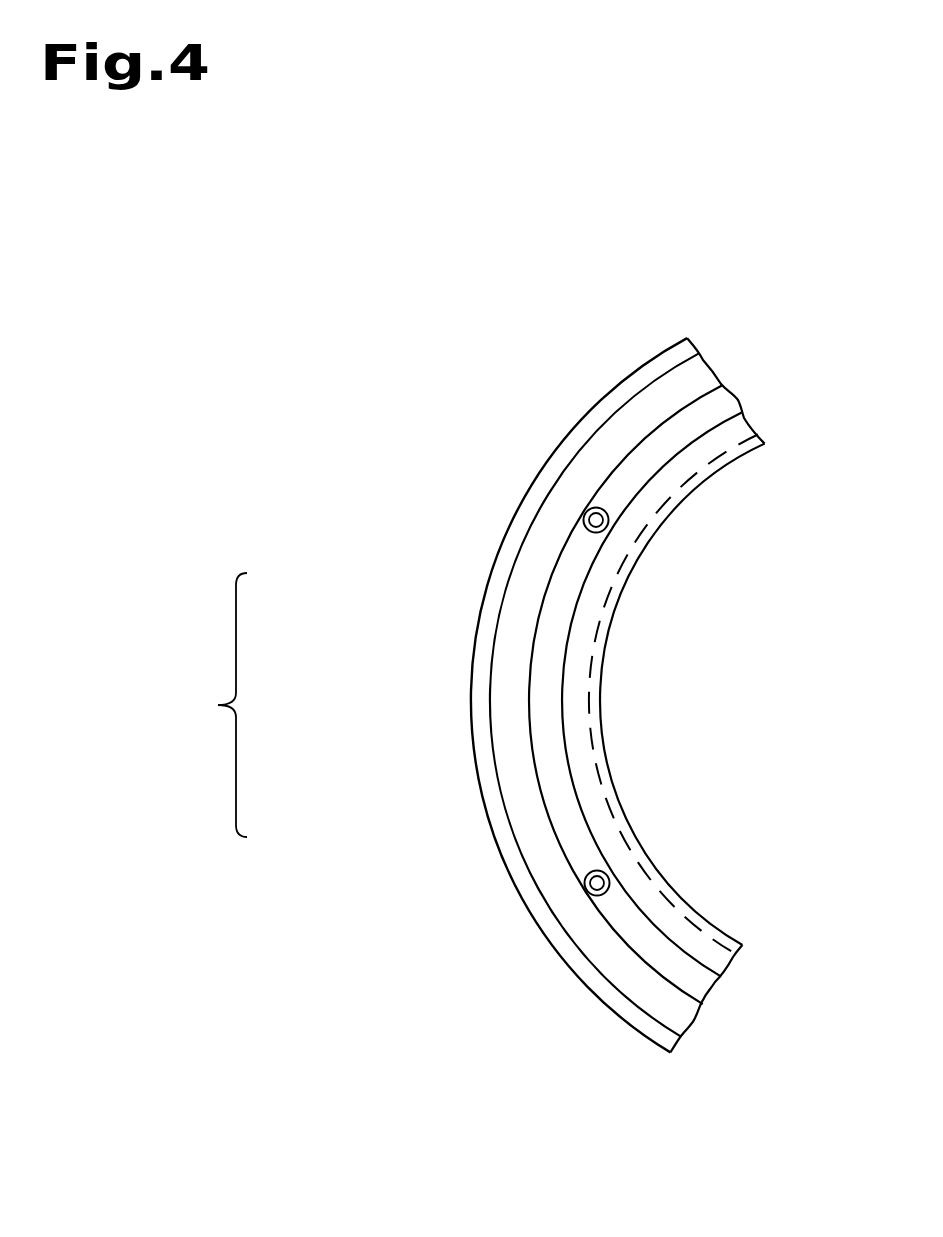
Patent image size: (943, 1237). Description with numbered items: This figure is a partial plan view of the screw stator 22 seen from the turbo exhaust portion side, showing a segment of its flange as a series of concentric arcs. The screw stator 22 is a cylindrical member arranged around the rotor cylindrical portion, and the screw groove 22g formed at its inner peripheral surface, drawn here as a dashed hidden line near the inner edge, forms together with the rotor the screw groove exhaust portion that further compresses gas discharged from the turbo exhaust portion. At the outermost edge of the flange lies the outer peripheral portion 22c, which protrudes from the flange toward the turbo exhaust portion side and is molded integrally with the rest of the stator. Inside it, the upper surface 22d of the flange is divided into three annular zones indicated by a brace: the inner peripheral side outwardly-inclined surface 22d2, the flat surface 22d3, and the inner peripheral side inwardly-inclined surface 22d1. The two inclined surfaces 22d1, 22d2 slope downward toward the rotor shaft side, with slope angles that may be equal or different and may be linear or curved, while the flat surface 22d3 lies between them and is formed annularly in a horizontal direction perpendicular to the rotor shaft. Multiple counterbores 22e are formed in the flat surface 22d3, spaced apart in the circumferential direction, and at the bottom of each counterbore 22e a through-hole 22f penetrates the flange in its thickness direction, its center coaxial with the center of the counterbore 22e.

The screw stator 22 is at (518, 900).
The outer peripheral portion 22c is at (633, 383).
The upper surface 22d is at (451, 694).
The inner peripheral side inwardly-inclined surface 22d1 is at (578, 743).
The inner peripheral side outwardly-inclined surface 22d2 is at (517, 624).
The flat surface 22d3 is at (537, 707).
The counterbore 22e is at (585, 517).
The through-hole 22f is at (586, 509).
The screw groove 22g is at (683, 494).